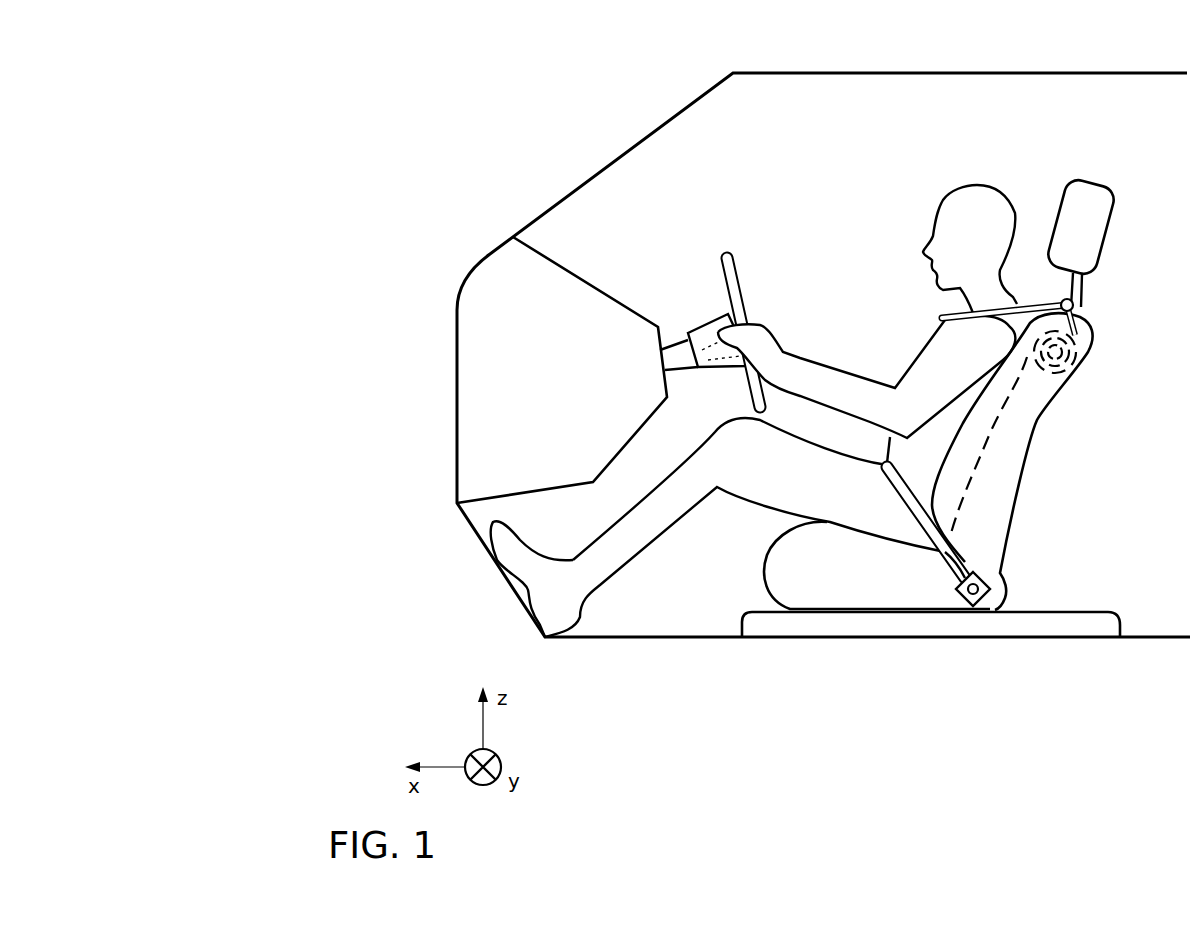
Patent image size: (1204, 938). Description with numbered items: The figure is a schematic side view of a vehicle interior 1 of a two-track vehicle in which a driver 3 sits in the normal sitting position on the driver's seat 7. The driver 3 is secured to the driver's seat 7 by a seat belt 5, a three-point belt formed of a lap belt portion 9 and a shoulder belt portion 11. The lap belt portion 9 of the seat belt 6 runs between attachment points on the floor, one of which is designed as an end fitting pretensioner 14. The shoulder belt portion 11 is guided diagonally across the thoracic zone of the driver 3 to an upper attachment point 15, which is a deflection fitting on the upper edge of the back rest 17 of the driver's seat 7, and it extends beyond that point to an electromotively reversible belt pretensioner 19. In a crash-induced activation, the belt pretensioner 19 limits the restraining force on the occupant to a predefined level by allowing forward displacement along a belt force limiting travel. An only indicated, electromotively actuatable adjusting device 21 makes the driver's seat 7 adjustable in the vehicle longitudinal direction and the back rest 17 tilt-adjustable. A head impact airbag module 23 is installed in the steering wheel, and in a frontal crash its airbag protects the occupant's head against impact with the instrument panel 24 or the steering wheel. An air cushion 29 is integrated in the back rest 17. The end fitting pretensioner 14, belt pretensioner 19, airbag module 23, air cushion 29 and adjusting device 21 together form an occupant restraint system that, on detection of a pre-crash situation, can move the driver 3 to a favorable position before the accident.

The vehicle interior 1 is at (1178, 133).
The driver 3 is at (966, 242).
The seat belt 5 is at (936, 585).
The seat belt 6 is at (727, 258).
The driver's seat 7 is at (1035, 507).
The lap belt portion 9 is at (892, 485).
The shoulder belt portion 11 is at (978, 312).
The end fitting pretensioner 14 is at (983, 620).
The upper attachment point 15 is at (1067, 305).
The back rest 17 is at (1025, 417).
The electromotively reversible belt pretensioner 19 is at (1067, 365).
The adjusting device 21 is at (1057, 628).
The head impact airbag module 23 is at (707, 342).
The instrument panel 24 is at (551, 382).
The air cushion 29 is at (957, 515).